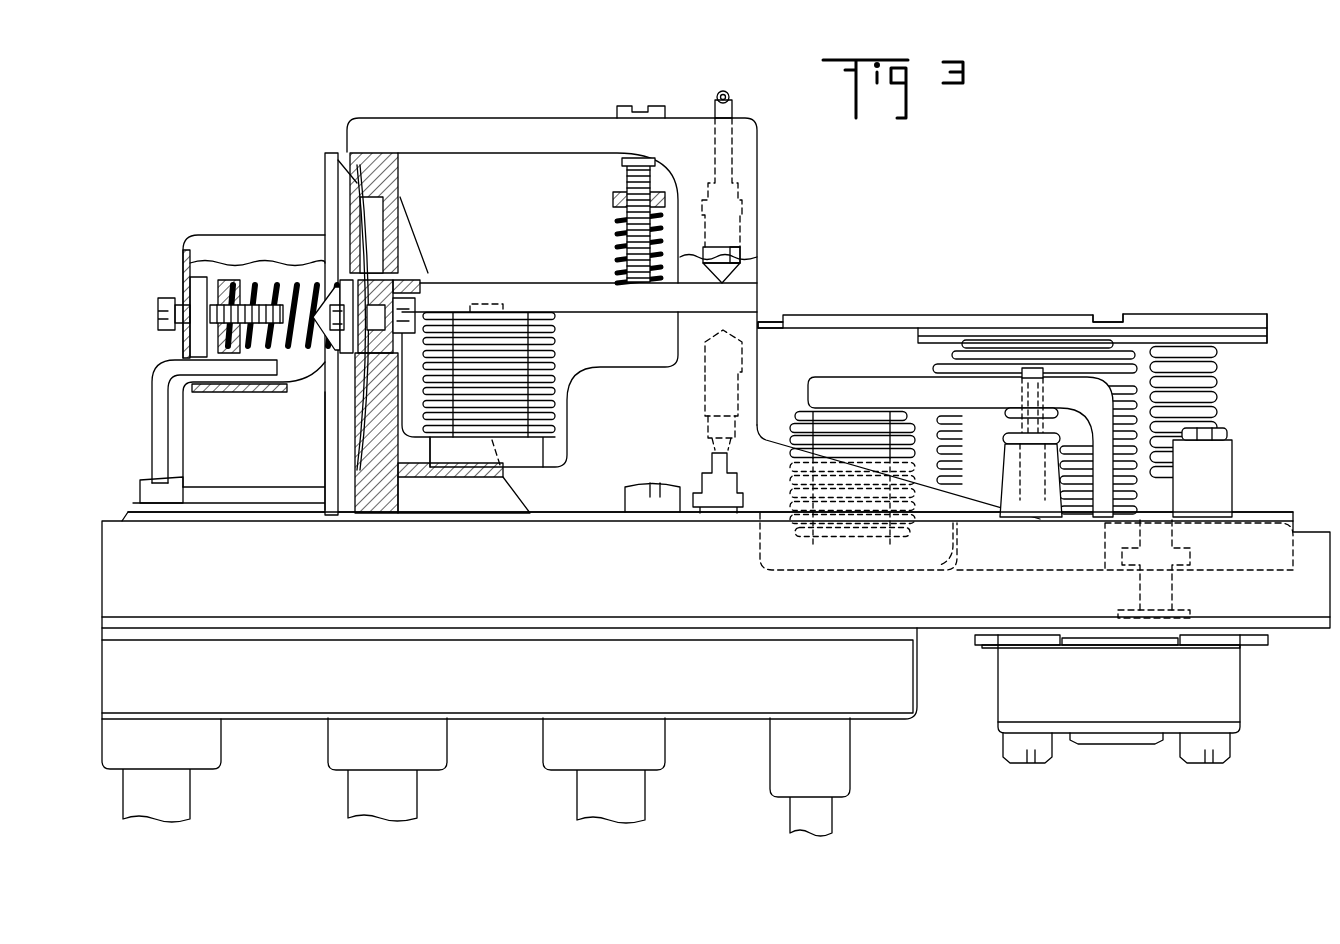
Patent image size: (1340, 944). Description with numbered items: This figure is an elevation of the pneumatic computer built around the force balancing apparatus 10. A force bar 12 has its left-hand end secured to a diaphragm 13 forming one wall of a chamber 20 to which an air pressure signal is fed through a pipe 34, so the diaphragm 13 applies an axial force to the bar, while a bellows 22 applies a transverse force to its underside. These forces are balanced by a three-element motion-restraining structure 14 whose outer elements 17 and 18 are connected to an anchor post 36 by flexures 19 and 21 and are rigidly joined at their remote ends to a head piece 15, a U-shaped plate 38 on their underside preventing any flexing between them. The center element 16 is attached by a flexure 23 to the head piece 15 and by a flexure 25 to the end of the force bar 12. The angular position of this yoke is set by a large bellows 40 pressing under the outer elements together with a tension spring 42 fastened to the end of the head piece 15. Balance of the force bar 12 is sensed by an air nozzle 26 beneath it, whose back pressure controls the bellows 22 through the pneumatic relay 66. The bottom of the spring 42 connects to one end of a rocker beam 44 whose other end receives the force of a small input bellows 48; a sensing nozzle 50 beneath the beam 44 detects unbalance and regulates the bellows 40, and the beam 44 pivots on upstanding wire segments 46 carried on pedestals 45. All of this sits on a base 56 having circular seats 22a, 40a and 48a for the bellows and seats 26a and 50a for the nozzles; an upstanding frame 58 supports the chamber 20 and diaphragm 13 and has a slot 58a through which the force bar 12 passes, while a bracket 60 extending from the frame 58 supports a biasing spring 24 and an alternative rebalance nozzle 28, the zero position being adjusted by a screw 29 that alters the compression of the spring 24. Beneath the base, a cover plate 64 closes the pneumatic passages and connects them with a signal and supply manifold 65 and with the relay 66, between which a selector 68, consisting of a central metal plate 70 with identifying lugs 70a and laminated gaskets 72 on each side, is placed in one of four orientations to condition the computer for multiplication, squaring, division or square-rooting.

The force balancing apparatus 10 is at (295, 82).
The force bar 12 is at (535, 287).
The diaphragm 13 is at (357, 398).
The three-element motion-restraining structure 14 is at (1029, 312).
The head piece 15 is at (1215, 318).
The center element 16 is at (1012, 305).
The outer element 17 is at (1012, 305).
The outer element 18 is at (912, 318).
The flexure 19 is at (824, 305).
The chamber 20 is at (210, 240).
The flexure 21 is at (824, 305).
The bellows 22 is at (548, 365).
The circular seat 22a is at (463, 452).
The flexure 23 is at (1108, 320).
The biasing spring 24 is at (613, 217).
The flexure 25 is at (775, 322).
The air nozzle 26 is at (685, 386).
The seat 26a is at (700, 372).
The alternative rebalance nozzle 28 is at (742, 262).
The screw 29 is at (623, 108).
The pipe 34 is at (155, 418).
The post 36 is at (760, 338).
The U-shaped plate 38 is at (1248, 340).
The large bellows 40 is at (950, 368).
The circular seat 40a is at (950, 560).
The tension spring 42 is at (1215, 405).
The rocker beam 44 is at (852, 382).
The pedestal 45 is at (1010, 462).
The wire segment 46 is at (1018, 425).
The small input bellows 48 is at (795, 418).
The circular seat 48a is at (782, 560).
The sensing nozzle 50 is at (1178, 569).
The seat 50a is at (1170, 575).
The base 56 is at (716, 639).
The upstanding frame 58 is at (387, 176).
The slot 58a is at (399, 270).
The bracket 60 is at (493, 128).
The cover plate 64 is at (493, 620).
The signal and supply manifold 65 is at (278, 697).
The pneumatic relay 66 is at (1120, 733).
The selector 68 is at (1152, 691).
The central metal plate 70 is at (1118, 646).
The lugs 70a is at (985, 635).
The gaskets 72 is at (1040, 635).